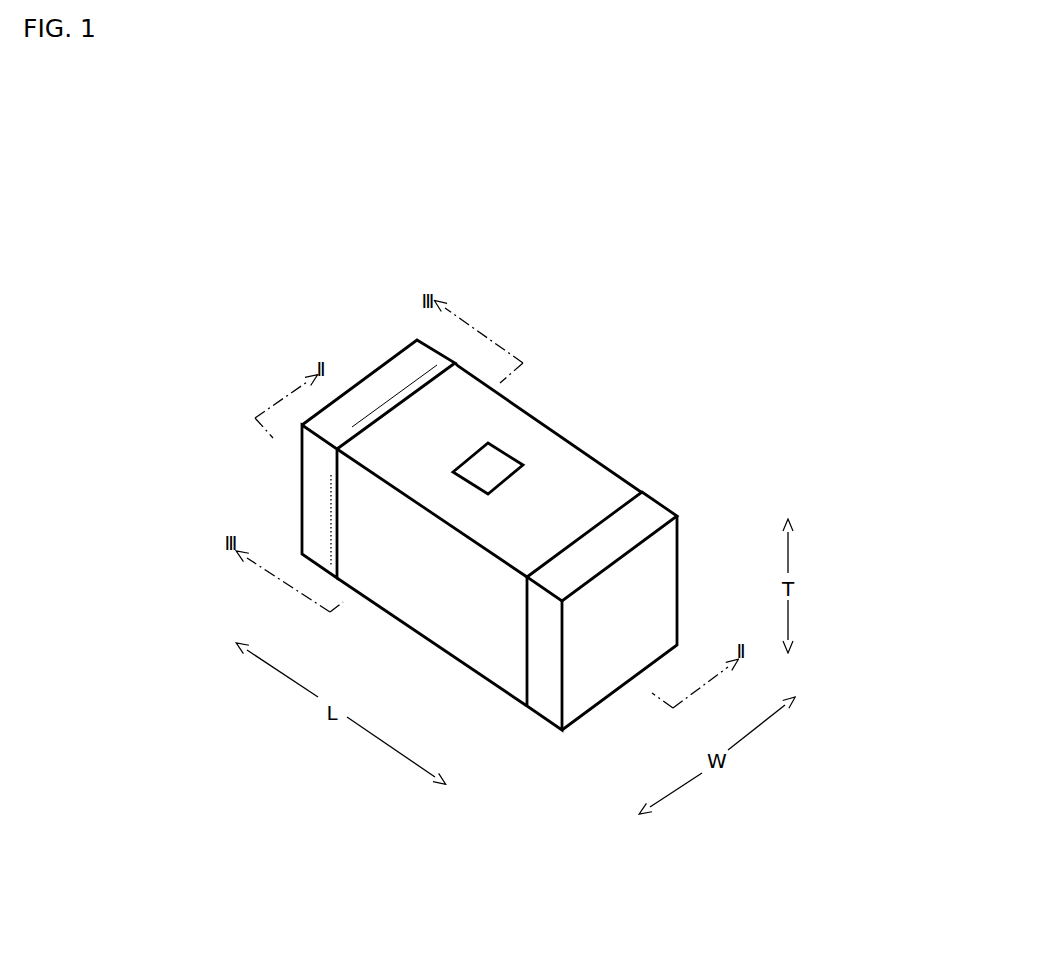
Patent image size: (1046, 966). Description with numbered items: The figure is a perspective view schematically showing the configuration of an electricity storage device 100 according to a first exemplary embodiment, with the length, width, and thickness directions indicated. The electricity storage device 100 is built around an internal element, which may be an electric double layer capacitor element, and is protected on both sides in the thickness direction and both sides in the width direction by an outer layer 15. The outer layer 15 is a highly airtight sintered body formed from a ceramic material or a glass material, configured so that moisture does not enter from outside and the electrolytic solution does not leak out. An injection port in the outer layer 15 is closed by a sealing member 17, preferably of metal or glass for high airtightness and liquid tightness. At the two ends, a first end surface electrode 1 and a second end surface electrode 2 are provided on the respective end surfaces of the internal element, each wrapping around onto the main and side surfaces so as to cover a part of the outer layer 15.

The electricity storage device 100 is at (682, 393).
The first end surface electrode 1 is at (383, 383).
The second end surface electrode 2 is at (643, 513).
The outer layer 15 is at (555, 463).
The sealing member 17 is at (495, 470).